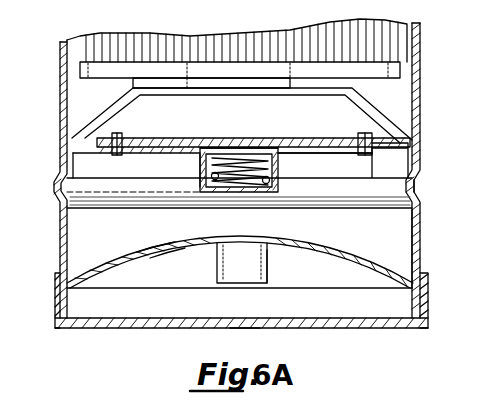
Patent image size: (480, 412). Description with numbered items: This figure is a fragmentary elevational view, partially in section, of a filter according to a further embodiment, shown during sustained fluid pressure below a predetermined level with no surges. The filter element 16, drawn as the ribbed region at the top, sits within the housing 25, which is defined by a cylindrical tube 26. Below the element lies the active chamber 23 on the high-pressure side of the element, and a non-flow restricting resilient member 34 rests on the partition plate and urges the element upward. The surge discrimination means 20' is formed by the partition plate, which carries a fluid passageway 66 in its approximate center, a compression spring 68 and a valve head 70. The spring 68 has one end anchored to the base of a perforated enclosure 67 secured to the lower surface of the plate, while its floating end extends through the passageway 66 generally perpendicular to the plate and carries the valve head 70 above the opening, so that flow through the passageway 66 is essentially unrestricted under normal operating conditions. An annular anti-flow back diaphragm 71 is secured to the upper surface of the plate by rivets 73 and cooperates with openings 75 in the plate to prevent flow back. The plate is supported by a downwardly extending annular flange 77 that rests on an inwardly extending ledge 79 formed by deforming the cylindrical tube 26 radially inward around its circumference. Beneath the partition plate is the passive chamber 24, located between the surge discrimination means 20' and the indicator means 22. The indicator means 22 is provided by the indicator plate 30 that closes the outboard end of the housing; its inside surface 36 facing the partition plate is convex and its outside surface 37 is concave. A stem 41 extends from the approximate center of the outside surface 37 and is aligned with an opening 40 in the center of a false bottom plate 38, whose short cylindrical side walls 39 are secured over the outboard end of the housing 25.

The filter element 16 is at (379, 37).
The housing 25 is at (420, 47).
The cylindrical tube 26 is at (421, 69).
The active chamber 23 is at (397, 92).
The resilient member 34 is at (387, 110).
The passive chamber 24 is at (397, 219).
The rivets 73 is at (119, 135).
The anti-flow back diaphragm 71 is at (168, 138).
The valve head 70 is at (248, 139).
The openings 75 is at (140, 154).
The annular flange 77 is at (100, 163).
The perforated enclosure 67 is at (278, 184).
The spring 68 is at (265, 160).
The fluid passageway 66 is at (199, 159).
The surge discrimination means 20' is at (47, 179).
The ledge 79 is at (63, 193).
The indicator plate 30 is at (100, 261).
The inside surface 36 is at (150, 248).
The outside surface 37 is at (174, 252).
The indicator means 22 is at (209, 266).
The stem 41 is at (268, 263).
The side walls 39 is at (55, 296).
The false bottom plate 38 is at (125, 331).
The opening 40 is at (244, 329).